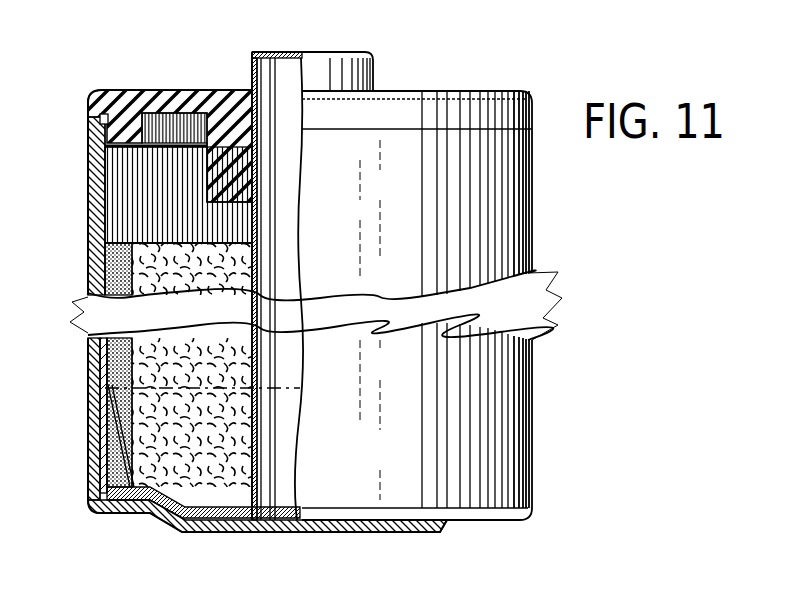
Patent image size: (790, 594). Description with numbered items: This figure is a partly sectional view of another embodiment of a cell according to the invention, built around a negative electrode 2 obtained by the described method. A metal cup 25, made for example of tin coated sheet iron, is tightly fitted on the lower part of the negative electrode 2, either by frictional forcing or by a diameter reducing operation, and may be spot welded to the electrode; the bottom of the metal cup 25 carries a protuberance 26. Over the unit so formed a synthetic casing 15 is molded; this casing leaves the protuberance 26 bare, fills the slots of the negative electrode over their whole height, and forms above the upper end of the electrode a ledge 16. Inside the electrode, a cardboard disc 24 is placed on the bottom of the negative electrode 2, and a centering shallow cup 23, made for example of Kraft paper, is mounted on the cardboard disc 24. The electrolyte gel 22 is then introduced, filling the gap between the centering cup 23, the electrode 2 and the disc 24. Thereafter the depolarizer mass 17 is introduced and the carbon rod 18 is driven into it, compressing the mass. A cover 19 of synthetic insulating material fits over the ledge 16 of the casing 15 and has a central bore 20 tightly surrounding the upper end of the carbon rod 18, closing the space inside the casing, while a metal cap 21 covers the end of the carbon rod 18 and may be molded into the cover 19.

The negative electrode 2 is at (95, 256).
The synthetic casing 15 is at (97, 391).
The ledge 16 is at (100, 125).
The depolarizer mass 17 is at (160, 355).
The carbon rod 18 is at (283, 244).
The cover 19 is at (128, 124).
The central bore 20 is at (235, 178).
The metal cap 21 is at (292, 56).
The electrolyte gel 22 is at (100, 356).
The centering shallow cup 23 is at (112, 428).
The cardboard disc 24 is at (147, 500).
The metal cup 25 is at (97, 452).
The protuberance 26 is at (215, 533).